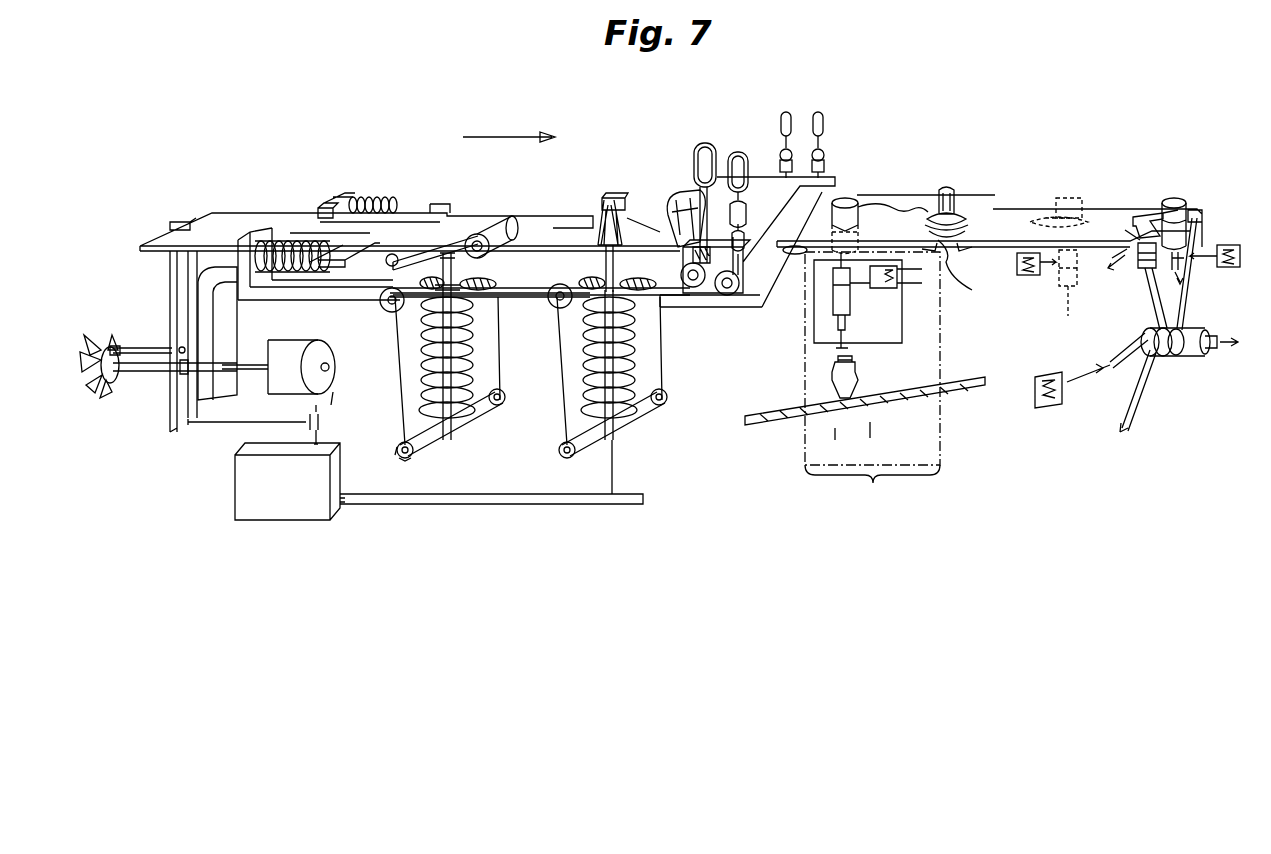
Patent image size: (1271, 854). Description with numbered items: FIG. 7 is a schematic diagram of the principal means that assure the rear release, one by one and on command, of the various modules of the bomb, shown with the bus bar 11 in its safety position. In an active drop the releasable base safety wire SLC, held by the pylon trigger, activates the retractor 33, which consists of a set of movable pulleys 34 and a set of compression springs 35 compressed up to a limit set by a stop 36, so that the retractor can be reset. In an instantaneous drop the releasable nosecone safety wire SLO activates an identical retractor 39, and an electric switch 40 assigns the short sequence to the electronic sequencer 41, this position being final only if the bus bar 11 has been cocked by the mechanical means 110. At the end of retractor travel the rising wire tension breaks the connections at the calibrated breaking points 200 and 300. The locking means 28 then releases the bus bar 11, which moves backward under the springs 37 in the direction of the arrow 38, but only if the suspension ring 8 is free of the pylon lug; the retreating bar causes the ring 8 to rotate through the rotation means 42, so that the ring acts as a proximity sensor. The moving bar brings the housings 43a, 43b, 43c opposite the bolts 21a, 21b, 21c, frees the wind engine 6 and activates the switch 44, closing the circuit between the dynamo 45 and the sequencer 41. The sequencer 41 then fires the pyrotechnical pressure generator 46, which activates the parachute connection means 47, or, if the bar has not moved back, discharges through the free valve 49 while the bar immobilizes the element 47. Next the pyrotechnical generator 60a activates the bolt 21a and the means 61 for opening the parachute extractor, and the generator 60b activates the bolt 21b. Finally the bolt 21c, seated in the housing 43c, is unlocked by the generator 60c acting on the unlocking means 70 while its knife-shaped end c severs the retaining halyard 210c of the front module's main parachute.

The wind engine 6 is at (120, 355).
The bus bar 11 is at (222, 220).
The springs 37 is at (365, 200).
The locking means 28 is at (505, 225).
The mechanical means 110 is at (605, 195).
The arrow 38 is at (505, 136).
The calibrated breaking point 300 is at (686, 235).
The calibrated breaking point 200 is at (748, 236).
The releasable nosecone safety wire SLO is at (782, 118).
The releasable base safety wire SLC is at (819, 112).
The bolt 21c is at (846, 203).
The ring 8 is at (947, 190).
The housing 43b is at (1040, 214).
The bolt 21b is at (1070, 198).
The housing 43a is at (1150, 216).
The bolt 21a is at (1175, 203).
The pyrotechnical generator 60a is at (1232, 245).
The rotation means 42 is at (970, 273).
The housing 43c is at (805, 258).
The unlocking means 70 is at (832, 300).
The pyrotechnical generator 60c is at (884, 290).
The pyrotechnical generator 60b is at (1032, 276).
The valve 49 is at (1142, 270).
The means for opening parachute extractor 61 is at (1180, 266).
The means for connection of parachute 47 is at (1186, 352).
The pyrotechnical pressure generator 46 is at (1050, 408).
The retaining halyard 210c is at (925, 400).
The knife shape c is at (840, 392).
The dynamo 45 is at (304, 336).
The switch 44 is at (322, 419).
The electronic sequencer 41 is at (290, 520).
The electric switch 40 is at (622, 493).
The stop 36 is at (440, 352).
The compression springs 35 is at (465, 350).
The movable pulleys 34 is at (398, 460).
The retractor 33 is at (434, 448).
The retractor 39 is at (630, 420).